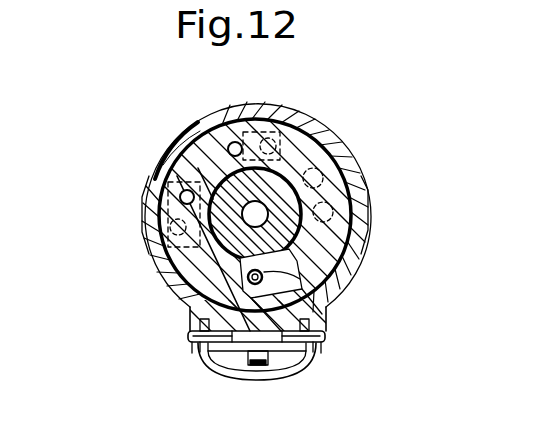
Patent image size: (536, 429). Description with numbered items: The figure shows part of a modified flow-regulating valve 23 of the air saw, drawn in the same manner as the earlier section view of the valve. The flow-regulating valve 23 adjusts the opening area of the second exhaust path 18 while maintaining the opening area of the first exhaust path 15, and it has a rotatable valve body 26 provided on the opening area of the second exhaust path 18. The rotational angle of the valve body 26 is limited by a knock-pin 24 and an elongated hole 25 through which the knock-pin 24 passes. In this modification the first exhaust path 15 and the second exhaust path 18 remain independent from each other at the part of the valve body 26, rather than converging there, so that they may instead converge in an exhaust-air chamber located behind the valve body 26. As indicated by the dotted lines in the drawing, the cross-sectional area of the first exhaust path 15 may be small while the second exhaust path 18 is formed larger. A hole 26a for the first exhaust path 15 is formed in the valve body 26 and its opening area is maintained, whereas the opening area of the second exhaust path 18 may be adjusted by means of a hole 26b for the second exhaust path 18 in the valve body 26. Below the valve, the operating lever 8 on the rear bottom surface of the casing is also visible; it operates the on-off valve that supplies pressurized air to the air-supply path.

The operating lever 8 is at (241, 379).
The first exhaust path 15 is at (277, 112).
The second exhaust path 18 is at (147, 238).
The flow-regulating valve 23 is at (186, 264).
The knock-pin 24 is at (300, 277).
The elongated hole 25 is at (307, 288).
The valve body 26 is at (190, 305).
The hole for the first exhaust path 26a is at (233, 142).
The hole for the second exhaust path 26b is at (180, 195).